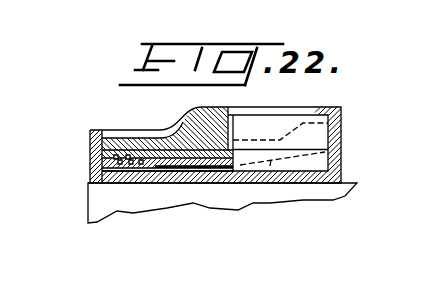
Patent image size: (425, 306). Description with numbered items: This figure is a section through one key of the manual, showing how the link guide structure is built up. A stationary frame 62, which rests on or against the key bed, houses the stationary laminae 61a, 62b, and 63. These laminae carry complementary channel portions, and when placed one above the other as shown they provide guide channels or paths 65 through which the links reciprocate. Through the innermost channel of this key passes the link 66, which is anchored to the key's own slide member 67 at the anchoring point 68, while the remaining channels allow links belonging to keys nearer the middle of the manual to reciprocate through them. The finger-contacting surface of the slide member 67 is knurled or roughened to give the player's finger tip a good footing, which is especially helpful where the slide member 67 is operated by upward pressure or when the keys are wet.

The stationary lamina 61a is at (114, 157).
The stationary frame 62 is at (342, 159).
The stationary lamina 62b is at (118, 162).
The stationary lamina 63 is at (103, 172).
The guide channels 65 is at (118, 168).
The link 66 is at (210, 167).
The slide member 67 is at (157, 142).
The anchoring point 68 is at (235, 170).